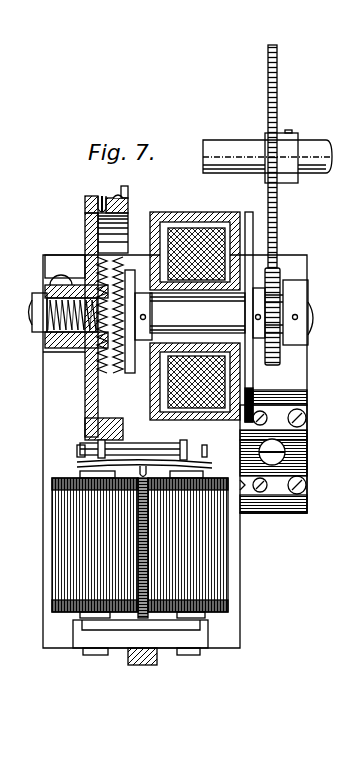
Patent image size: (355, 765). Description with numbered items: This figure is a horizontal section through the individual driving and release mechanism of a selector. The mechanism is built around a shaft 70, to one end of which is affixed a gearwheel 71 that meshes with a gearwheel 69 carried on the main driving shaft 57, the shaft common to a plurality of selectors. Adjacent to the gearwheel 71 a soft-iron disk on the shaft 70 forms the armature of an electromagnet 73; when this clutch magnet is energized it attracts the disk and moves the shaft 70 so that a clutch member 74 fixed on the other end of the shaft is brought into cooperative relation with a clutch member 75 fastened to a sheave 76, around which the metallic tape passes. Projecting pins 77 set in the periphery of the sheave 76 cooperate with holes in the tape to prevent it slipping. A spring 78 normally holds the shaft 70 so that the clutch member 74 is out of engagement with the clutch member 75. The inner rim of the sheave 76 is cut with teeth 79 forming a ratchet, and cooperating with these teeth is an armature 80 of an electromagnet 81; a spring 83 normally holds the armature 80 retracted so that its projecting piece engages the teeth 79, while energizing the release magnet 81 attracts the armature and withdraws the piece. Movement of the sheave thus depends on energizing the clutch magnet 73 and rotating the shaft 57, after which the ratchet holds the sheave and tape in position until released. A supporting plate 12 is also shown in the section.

The supporting plate 12 is at (251, 222).
The main driving shaft 57 is at (316, 147).
The gearwheel 69 is at (273, 102).
The shaft 70 is at (219, 321).
The gearwheel 71 is at (278, 277).
The electromagnet 73 is at (187, 257).
The clutch member 74 is at (92, 257).
The clutch member 75 is at (90, 388).
The sheave 76 is at (88, 212).
The projecting pins 77 is at (102, 197).
The spring 78 is at (156, 451).
The teeth 79 is at (126, 193).
The armature 80 is at (88, 452).
The electromagnet 81 is at (62, 555).
The spring 83 is at (157, 625).